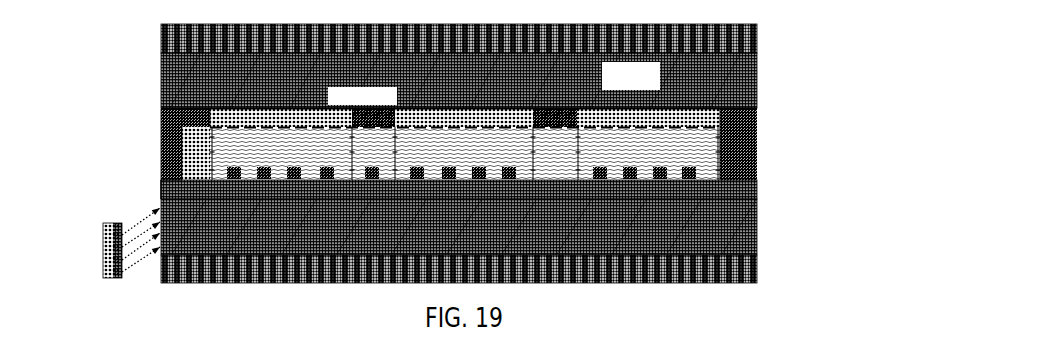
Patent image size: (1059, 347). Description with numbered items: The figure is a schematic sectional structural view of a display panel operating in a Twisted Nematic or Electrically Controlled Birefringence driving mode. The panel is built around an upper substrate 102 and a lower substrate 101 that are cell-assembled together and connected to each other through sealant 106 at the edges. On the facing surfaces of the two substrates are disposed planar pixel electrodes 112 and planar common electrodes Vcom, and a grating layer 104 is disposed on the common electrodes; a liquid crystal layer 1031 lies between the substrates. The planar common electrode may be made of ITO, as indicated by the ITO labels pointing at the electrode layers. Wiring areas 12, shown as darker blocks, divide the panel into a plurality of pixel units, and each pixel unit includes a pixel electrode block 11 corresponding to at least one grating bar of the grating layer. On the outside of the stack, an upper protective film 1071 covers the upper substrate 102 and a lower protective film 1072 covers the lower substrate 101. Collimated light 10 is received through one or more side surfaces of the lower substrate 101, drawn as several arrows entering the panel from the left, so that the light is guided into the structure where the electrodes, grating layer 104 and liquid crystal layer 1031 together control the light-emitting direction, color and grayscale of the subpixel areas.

The upper protective film 1071 is at (777, 53).
The upper substrate 102 is at (770, 97).
The sealant 106 is at (775, 158).
The wiring area 12 is at (562, 117).
The liquid crystal layer 1031 is at (758, 148).
The planar pixel electrode 112 is at (240, 117).
The pixel electrode block 11 is at (448, 117).
The grating layer 104 is at (160, 147).
The ITO electrode ITO is at (772, 123).
The planar common electrode Vcom is at (158, 193).
The lower substrate 101 is at (777, 228).
The lower protective film 1072 is at (777, 267).
The collimated light 10 is at (116, 243).